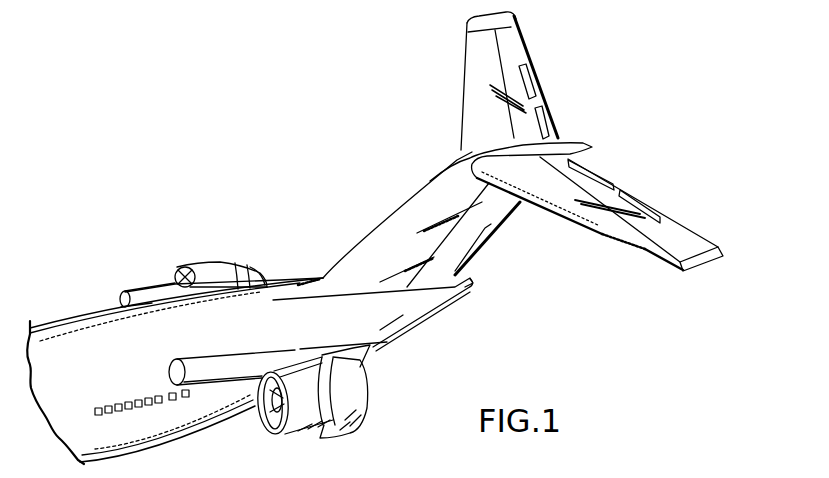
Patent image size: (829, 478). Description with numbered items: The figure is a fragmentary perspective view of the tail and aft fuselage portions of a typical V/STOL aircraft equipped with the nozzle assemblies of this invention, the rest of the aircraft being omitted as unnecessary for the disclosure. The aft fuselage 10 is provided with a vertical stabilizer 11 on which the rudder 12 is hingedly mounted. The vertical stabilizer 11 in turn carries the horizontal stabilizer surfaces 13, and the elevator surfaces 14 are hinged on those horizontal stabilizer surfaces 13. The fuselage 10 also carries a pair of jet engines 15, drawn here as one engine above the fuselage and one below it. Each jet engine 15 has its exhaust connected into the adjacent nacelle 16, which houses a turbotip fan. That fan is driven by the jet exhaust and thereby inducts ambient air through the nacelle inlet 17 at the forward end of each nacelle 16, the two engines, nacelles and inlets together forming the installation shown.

The fuselage 10 is at (70, 334).
The vertical stabilizer 11 is at (423, 192).
The rudder 12 is at (497, 215).
The horizontal stabilizer surfaces 13 is at (475, 87).
The elevator surfaces 14 is at (515, 50).
The jet engines 15 is at (140, 292).
The nacelle 16 is at (210, 268).
The nacelle inlet 17 is at (178, 277).